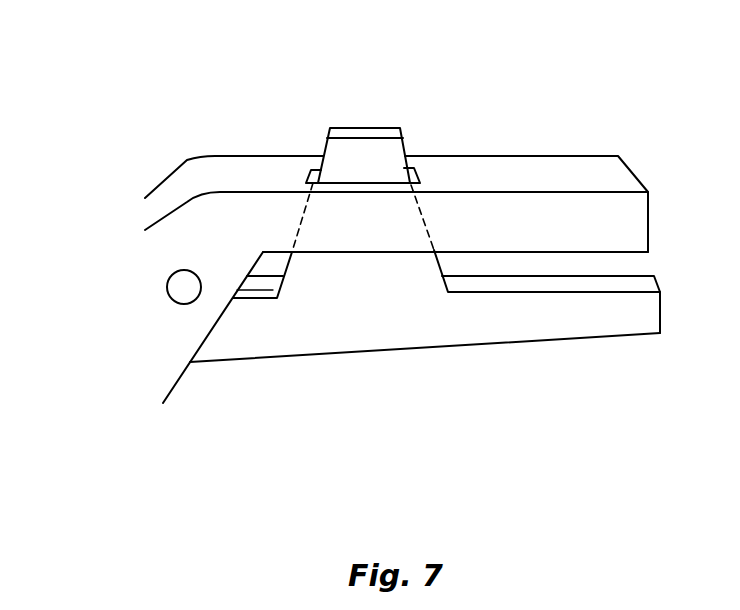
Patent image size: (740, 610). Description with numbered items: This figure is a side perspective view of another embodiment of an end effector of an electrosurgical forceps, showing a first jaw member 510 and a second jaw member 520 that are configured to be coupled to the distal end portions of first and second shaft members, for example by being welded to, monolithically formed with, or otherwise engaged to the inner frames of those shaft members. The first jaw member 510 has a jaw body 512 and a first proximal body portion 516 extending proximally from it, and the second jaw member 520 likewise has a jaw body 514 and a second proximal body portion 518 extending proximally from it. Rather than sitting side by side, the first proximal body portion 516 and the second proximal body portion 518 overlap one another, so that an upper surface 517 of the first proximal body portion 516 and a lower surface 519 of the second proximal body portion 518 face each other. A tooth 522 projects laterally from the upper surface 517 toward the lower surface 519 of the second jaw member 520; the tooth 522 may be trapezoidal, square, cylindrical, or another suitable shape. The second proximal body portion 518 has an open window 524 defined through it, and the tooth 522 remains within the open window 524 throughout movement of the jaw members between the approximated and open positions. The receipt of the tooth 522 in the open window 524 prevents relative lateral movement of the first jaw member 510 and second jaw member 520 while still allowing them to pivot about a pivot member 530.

The first jaw member 510 is at (345, 360).
The jaw body 512 is at (540, 322).
The jaw body 514 is at (615, 202).
The first proximal body portion 516 is at (331, 355).
The upper surface 517 is at (237, 290).
The second proximal body portion 518 is at (197, 178).
The lower surface 519 is at (258, 265).
The second jaw member 520 is at (345, 134).
The tooth 522 is at (363, 148).
The open window 524 is at (315, 169).
The pivot member 530 is at (167, 284).